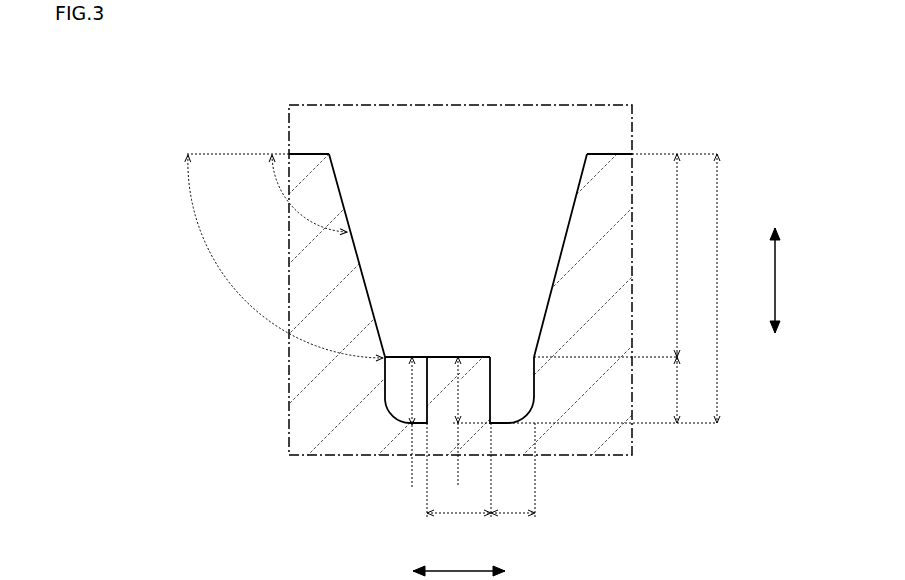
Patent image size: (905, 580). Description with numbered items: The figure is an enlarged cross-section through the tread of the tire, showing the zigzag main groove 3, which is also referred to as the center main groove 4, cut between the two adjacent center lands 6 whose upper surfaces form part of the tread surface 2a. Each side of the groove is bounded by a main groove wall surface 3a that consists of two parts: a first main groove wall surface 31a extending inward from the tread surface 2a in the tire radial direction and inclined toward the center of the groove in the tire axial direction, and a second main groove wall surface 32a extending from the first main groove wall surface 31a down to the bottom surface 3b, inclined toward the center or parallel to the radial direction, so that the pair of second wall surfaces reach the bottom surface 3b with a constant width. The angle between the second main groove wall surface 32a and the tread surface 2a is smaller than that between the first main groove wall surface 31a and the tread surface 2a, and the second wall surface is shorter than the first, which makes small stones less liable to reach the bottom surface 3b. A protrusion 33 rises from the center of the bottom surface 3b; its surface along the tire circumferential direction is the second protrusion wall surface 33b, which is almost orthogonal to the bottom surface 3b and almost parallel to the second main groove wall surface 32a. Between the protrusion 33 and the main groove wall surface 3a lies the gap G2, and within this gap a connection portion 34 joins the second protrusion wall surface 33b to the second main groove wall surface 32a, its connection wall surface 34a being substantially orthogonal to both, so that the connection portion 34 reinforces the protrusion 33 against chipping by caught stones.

The tread surface 2a is at (327, 153).
The center land 6 is at (327, 152).
The zigzag main groove 3 is at (533, 145).
The center main groove 4 is at (452, 322).
The main groove wall surface 3a is at (361, 253).
The first main groove wall surface 31a is at (348, 202).
The bottom surface 3b is at (506, 405).
The second main groove wall surface 32a is at (395, 355).
The protrusion 33 is at (470, 354).
The second protrusion wall surface 33b is at (427, 356).
The connection portion 34 is at (394, 354).
The connection wall surface 34a is at (384, 390).
The gap G2 is at (405, 426).